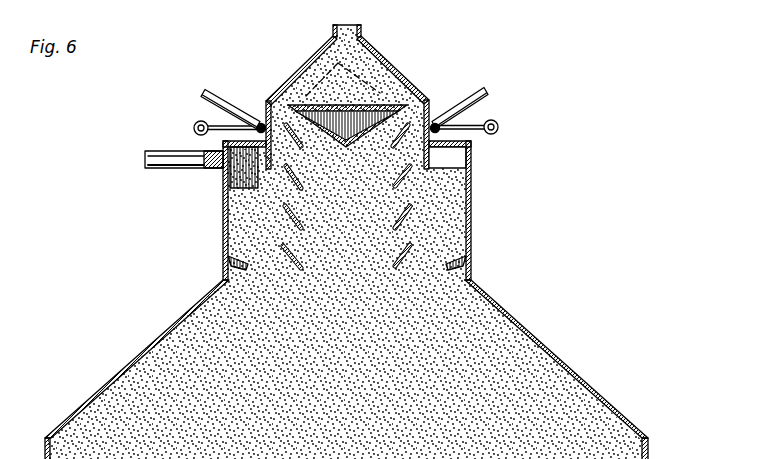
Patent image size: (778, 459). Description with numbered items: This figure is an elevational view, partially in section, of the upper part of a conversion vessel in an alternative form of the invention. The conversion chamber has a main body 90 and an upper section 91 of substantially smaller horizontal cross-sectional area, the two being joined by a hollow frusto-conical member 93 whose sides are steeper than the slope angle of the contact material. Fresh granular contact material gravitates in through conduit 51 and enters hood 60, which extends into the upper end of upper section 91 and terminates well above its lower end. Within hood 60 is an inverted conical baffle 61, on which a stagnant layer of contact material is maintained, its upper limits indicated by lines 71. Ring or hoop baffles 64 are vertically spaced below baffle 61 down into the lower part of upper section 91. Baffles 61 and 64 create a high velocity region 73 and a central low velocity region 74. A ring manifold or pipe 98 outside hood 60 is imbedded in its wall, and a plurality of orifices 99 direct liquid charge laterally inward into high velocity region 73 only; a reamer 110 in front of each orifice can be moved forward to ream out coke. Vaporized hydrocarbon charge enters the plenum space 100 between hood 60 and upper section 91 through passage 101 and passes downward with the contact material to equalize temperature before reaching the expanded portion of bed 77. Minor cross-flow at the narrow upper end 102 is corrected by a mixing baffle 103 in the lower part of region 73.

The conduit 51 is at (353, 23).
The hood 60 is at (277, 72).
The inverted conical baffle 61 is at (373, 90).
The lines indicating upper limits of stagnant layer 71 is at (305, 82).
The high velocity region 73 is at (418, 206).
The bed 77 is at (543, 375).
The low velocity region 74 is at (322, 212).
The ring or hoop baffles 64 is at (280, 210).
The main body 90 is at (641, 440).
The upper section 91 is at (465, 270).
The hollow frusto-conical member 93 is at (510, 322).
The ring manifold or pipe 98 is at (432, 103).
The orifices 99 is at (258, 93).
The plenum space 100 is at (447, 153).
The passage 101 is at (148, 145).
The upper end of expanded section 102 is at (447, 175).
The mixing baffle 103 is at (458, 237).
The reamer 110 is at (491, 114).